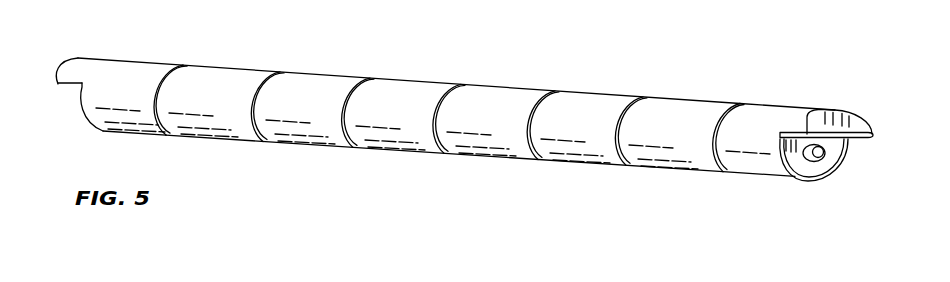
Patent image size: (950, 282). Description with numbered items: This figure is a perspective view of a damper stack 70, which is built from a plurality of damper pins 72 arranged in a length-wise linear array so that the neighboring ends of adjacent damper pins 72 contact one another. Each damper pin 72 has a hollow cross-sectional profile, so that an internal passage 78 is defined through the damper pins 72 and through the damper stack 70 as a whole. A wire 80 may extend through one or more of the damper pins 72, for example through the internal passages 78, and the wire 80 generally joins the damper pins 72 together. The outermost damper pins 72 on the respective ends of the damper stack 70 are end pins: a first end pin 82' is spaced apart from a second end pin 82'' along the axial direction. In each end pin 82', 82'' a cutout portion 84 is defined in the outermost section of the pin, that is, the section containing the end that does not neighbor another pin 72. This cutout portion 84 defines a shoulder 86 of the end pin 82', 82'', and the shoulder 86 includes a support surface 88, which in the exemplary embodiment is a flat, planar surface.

The damper stack 70 is at (635, 52).
The damper pin 72 is at (315, 83).
The internal passage 78 is at (804, 162).
The wire 80 is at (818, 162).
The first end pin 82' is at (771, 112).
The second end pin 82'' is at (132, 69).
The cutout portion 84 is at (74, 99).
The shoulder 86 is at (72, 72).
The support surface 88 is at (62, 87).